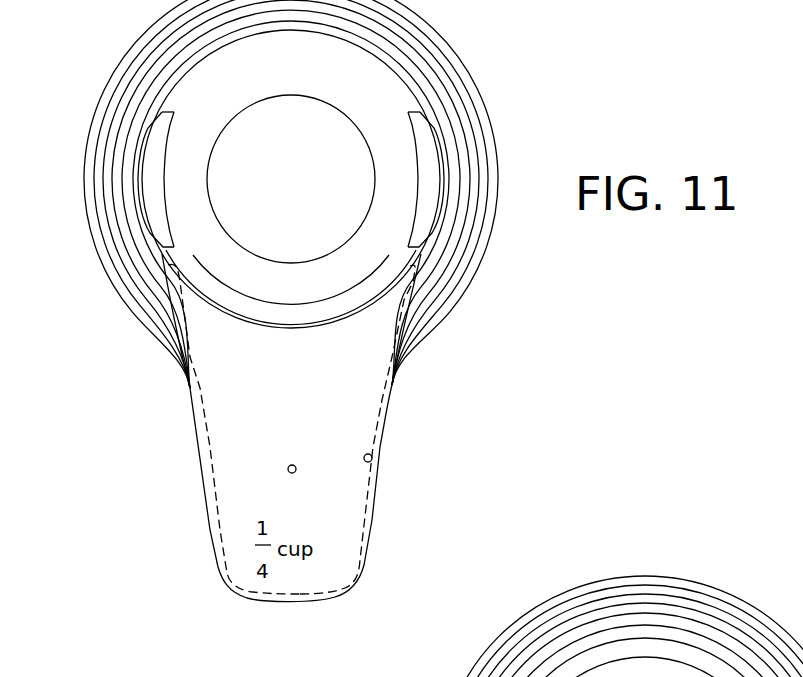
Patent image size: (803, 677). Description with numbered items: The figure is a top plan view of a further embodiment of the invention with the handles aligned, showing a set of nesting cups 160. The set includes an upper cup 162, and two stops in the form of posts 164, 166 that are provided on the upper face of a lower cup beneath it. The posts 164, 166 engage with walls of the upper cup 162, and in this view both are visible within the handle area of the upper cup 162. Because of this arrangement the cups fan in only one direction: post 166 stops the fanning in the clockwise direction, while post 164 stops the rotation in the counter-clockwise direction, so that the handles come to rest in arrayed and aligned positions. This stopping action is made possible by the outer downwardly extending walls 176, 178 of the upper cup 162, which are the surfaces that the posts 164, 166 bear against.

The set of nesting cups 160 is at (148, 458).
The upper cup 162 is at (350, 360).
The post 164 is at (366, 462).
The post 166 is at (288, 469).
The outer downwardly extending wall 176 is at (382, 402).
The outer downwardly extending wall 178 is at (220, 530).